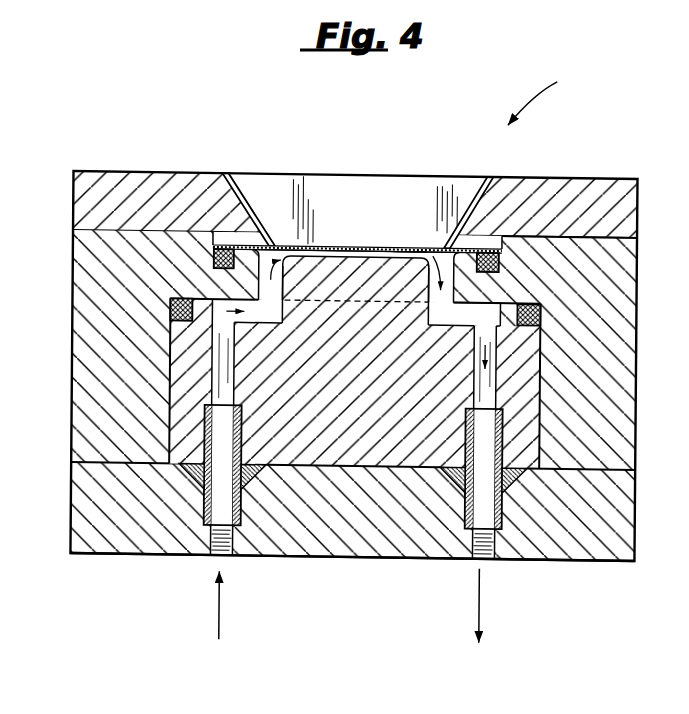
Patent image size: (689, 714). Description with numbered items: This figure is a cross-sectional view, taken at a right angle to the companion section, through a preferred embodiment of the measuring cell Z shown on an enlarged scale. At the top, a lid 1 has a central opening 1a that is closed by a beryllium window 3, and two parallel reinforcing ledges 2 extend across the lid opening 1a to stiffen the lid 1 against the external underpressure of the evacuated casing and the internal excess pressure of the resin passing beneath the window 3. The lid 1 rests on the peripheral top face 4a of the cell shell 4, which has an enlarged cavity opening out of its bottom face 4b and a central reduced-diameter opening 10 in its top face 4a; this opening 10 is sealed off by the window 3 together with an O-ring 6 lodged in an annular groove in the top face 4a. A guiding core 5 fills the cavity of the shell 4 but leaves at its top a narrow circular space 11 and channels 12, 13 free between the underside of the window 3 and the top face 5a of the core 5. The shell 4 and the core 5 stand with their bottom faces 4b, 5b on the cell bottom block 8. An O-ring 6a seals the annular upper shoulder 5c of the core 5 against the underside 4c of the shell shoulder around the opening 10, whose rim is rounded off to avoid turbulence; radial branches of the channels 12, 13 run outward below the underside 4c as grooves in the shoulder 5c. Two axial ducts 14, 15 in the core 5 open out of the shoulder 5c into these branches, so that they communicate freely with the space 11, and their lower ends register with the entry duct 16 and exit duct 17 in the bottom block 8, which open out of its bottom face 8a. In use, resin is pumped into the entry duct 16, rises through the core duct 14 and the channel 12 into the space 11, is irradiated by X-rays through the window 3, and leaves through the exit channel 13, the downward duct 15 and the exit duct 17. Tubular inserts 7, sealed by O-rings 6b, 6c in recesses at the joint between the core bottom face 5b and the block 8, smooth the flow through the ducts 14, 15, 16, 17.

The lid 1 is at (136, 174).
The central opening 1a is at (241, 182).
The reinforcing ledges 2 is at (325, 177).
The window 3 is at (373, 242).
The cell shell 4 is at (85, 333).
The peripheral top face 4a is at (560, 229).
The bottom face 4b is at (594, 466).
The shoulder underside 4c is at (189, 318).
The guiding core 5 is at (170, 399).
The top face of the guiding core 5a is at (352, 249).
The bottom face of the core 5b is at (333, 465).
The upper shoulder 5c is at (505, 291).
The O-ring 6 is at (212, 255).
The O-ring 6a is at (542, 305).
The O-ring 6b is at (188, 467).
The O-ring 6c is at (513, 482).
The tubular inserts 7 is at (240, 426).
The cell bottom block 8 is at (80, 492).
The bottom face of the bottom block 8a is at (145, 553).
The central opening 10 is at (268, 252).
The circular space 11 is at (404, 242).
The channel 12 is at (286, 290).
The channel 13 is at (428, 306).
The axial duct 14 is at (230, 369).
The axial duct 15 is at (483, 373).
The entry duct 16 is at (234, 555).
The exit duct 17 is at (495, 554).
The measuring cell Z is at (538, 92).